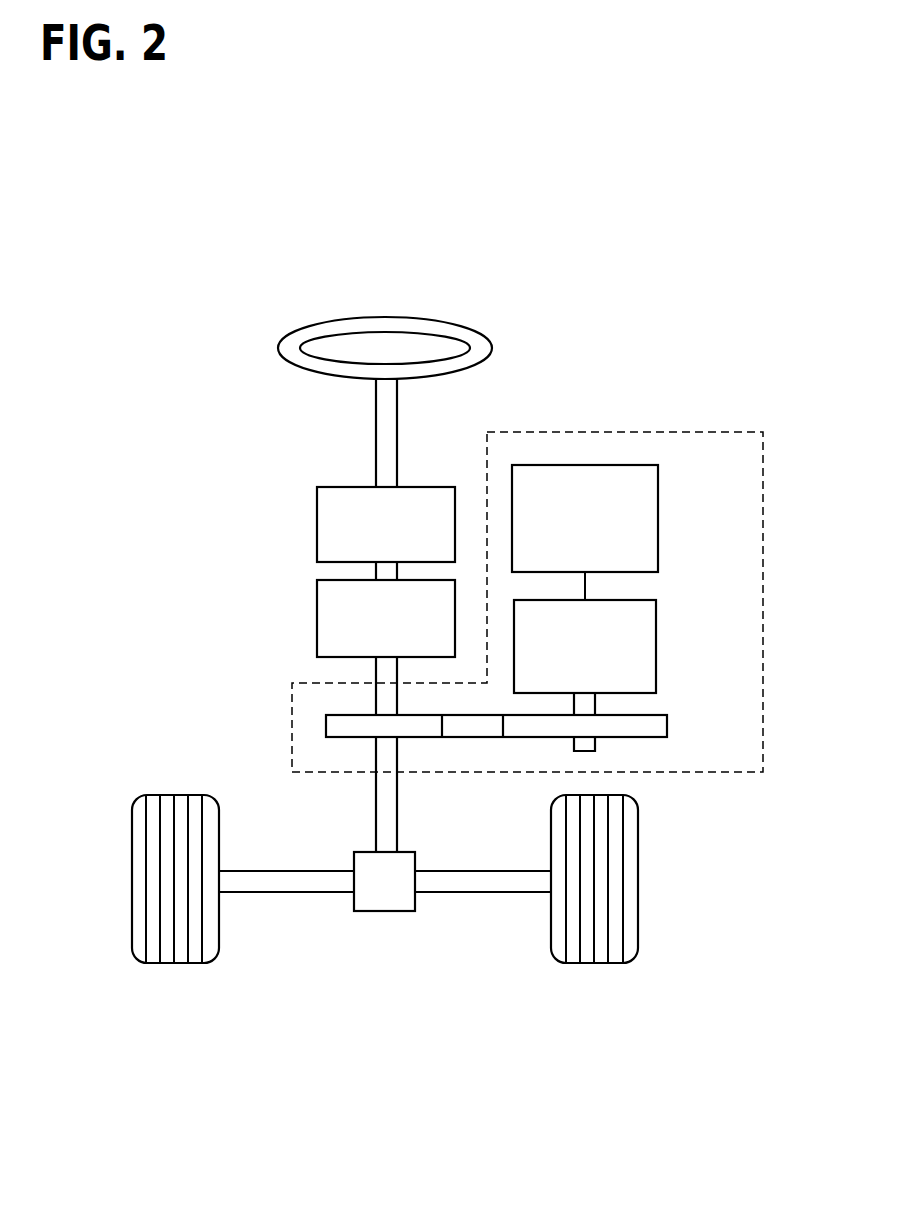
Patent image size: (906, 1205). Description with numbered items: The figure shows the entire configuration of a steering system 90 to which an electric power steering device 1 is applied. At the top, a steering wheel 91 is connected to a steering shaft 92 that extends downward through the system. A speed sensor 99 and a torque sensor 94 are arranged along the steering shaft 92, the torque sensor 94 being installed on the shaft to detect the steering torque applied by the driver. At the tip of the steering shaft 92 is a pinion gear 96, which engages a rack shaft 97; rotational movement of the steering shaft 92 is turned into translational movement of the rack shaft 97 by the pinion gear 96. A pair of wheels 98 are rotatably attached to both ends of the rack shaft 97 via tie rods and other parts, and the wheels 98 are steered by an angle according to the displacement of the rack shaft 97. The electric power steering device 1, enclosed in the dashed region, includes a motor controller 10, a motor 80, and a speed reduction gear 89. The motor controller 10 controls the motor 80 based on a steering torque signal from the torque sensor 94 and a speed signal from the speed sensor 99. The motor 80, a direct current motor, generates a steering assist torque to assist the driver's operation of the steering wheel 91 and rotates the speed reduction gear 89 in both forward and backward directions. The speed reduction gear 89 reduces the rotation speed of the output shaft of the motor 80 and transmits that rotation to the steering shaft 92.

The steering system 90 is at (634, 281).
The electric power steering device 1 is at (741, 431).
The steering wheel 91 is at (278, 349).
The steering shaft 92 is at (376, 435).
The speed sensor 99 is at (317, 519).
The torque sensor 94 is at (317, 617).
The motor controller 10 is at (585, 464).
The motor 80 is at (656, 643).
The speed reduction gear 89 is at (667, 726).
The pinion gear 96 is at (375, 912).
The rack shaft 97 is at (281, 893).
The wheels 98 is at (190, 964).